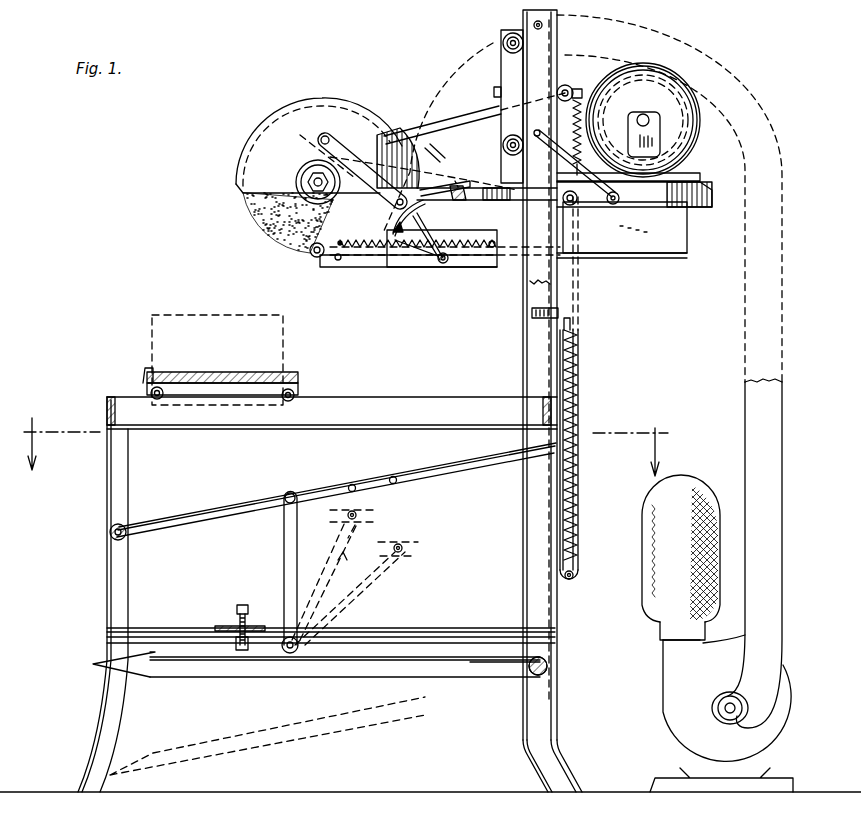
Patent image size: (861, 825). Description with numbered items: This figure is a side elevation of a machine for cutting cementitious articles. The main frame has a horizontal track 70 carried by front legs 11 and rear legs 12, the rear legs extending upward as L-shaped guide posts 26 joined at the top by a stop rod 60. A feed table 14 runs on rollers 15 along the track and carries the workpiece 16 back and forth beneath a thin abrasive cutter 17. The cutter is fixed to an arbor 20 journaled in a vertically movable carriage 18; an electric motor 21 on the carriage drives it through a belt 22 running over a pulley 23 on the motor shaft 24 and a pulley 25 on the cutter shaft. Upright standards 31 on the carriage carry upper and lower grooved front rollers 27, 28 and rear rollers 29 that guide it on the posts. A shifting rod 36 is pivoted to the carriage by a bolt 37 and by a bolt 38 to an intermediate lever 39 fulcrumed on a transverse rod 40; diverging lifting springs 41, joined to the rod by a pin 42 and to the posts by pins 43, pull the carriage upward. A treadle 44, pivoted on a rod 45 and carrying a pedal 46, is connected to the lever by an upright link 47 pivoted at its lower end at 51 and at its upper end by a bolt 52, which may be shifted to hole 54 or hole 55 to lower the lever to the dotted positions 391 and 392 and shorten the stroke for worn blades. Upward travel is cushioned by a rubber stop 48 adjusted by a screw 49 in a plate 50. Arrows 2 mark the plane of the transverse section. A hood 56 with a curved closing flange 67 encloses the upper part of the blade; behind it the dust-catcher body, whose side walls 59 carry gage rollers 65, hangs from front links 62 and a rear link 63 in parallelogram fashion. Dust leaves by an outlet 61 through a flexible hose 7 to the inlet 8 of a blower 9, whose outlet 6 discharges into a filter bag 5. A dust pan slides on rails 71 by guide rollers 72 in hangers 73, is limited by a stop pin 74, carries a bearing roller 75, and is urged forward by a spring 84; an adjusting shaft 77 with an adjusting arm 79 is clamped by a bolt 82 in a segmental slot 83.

The section line 2- 2 is at (344, 447).
The filter bag 5 is at (680, 480).
The blower outlet 6 is at (660, 640).
The flexible hose 7 is at (752, 415).
The blower inlet 8 is at (730, 722).
The suction fan or blower 9 is at (721, 713).
The front legs 11 is at (108, 580).
The rear legs 12 is at (558, 715).
The feed table 14 is at (296, 375).
The rollers 15 is at (150, 392).
The workpiece 16 is at (150, 325).
The cutter 17 is at (256, 218).
The carriage 18 is at (706, 185).
The cutter shaft 20 is at (300, 178).
The electric motor 21 is at (657, 74).
The belt 22 is at (448, 128).
The motor pulley 23 is at (690, 100).
The motor shaft 24 is at (644, 115).
The cutter shaft pulley 25 is at (320, 140).
The guide posts 26 is at (534, 24).
The upper front guide rollers 27 is at (503, 43).
The lower front guide rollers 28 is at (503, 148).
The rear guide rollers 29 is at (569, 86).
The standards 31 is at (500, 67).
The shifting rod 36 is at (560, 285).
The bolt 37 is at (574, 206).
The bolt 38 is at (582, 430).
The intermediate lever 39 is at (190, 515).
The transverse rod 40 is at (110, 532).
The lifting springs 41 is at (580, 516).
The pin 42 is at (576, 580).
The pins 43 is at (560, 313).
The treadle 44 is at (446, 670).
The pivot rod 45 is at (548, 666).
The pedal 46 is at (105, 667).
The upright link 47 is at (283, 566).
The stop 48 is at (242, 652).
The screw 49 is at (242, 606).
The plate 50 is at (222, 625).
The link lower pivot 51 is at (290, 655).
The pivot bolt 52 is at (285, 494).
The intermediate hole 54 is at (350, 484).
The rearmost hole 55 is at (392, 476).
The hood 56 is at (262, 130).
The side walls 59 is at (682, 233).
The stop rod 60 is at (556, 10).
The outlet 61 is at (430, 190).
The front links 62 is at (372, 148).
The rear link 63 is at (584, 126).
The gage 65 is at (308, 254).
The closing flange 67 is at (440, 154).
The table top 70 is at (332, 413).
The rails 71 is at (672, 256).
The guide rollers 72 is at (497, 236).
The hangers 73 is at (476, 232).
The stop pin 74 is at (339, 262).
The bearing roller 75 is at (318, 262).
The adjusting shaft 77 is at (447, 264).
The adjusting arm 79 is at (432, 262).
The clamping bolt 82 is at (388, 236).
The segmental slot 83 is at (408, 228).
The spring 84 is at (482, 264).
The intermediate lever intermediate position 391 is at (378, 516).
The intermediate lever lowered position 392 is at (416, 553).